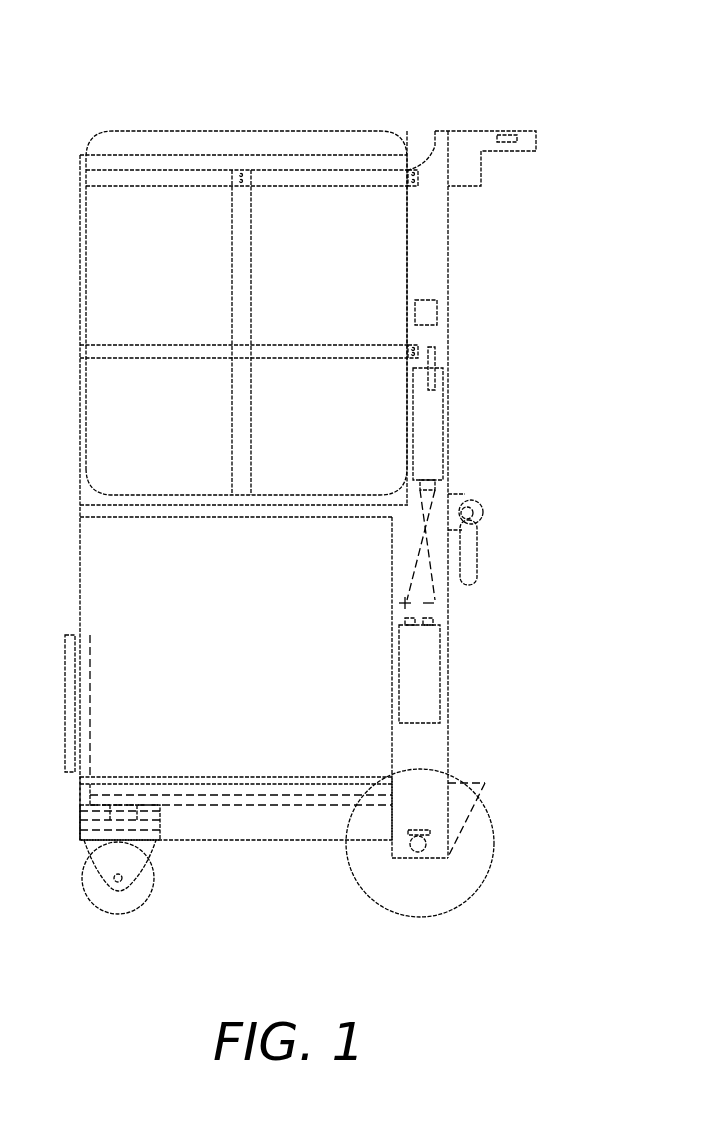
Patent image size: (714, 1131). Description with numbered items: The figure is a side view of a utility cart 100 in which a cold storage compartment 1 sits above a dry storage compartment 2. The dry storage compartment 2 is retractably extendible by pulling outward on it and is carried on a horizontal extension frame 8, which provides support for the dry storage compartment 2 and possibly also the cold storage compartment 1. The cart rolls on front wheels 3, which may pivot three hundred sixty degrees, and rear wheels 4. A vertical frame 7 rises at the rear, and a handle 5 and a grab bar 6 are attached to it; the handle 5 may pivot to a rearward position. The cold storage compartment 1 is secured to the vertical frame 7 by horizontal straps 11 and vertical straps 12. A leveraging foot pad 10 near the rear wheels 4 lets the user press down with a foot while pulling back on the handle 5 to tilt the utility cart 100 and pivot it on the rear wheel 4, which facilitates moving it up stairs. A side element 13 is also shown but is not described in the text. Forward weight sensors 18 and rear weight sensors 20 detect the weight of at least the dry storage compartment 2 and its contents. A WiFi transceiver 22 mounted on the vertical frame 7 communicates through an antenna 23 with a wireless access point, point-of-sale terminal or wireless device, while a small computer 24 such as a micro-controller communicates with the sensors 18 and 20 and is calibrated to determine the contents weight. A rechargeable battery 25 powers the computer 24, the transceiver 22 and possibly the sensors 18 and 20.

The utility cart 100 is at (228, 95).
The cold storage compartment 1 is at (100, 252).
The dry storage compartment 2 is at (208, 632).
The front wheels 3 is at (138, 890).
The rear wheels 4 is at (407, 901).
The handle 5 is at (467, 142).
The grab bar 6 is at (463, 503).
The vertical frame 7 is at (430, 228).
The horizontal extension frame 8 is at (248, 830).
The leveraging foot pad 10 is at (480, 790).
The horizontal straps 11 is at (309, 345).
The vertical straps 12 is at (242, 290).
The side handle 13 is at (65, 690).
The forward weight sensors 18 is at (100, 822).
The rear weight sensors 20 is at (418, 830).
The WiFi transceiver 22 is at (428, 424).
The antenna 23 is at (432, 360).
The small computer 24 is at (426, 312).
The rechargeable battery 25 is at (420, 660).